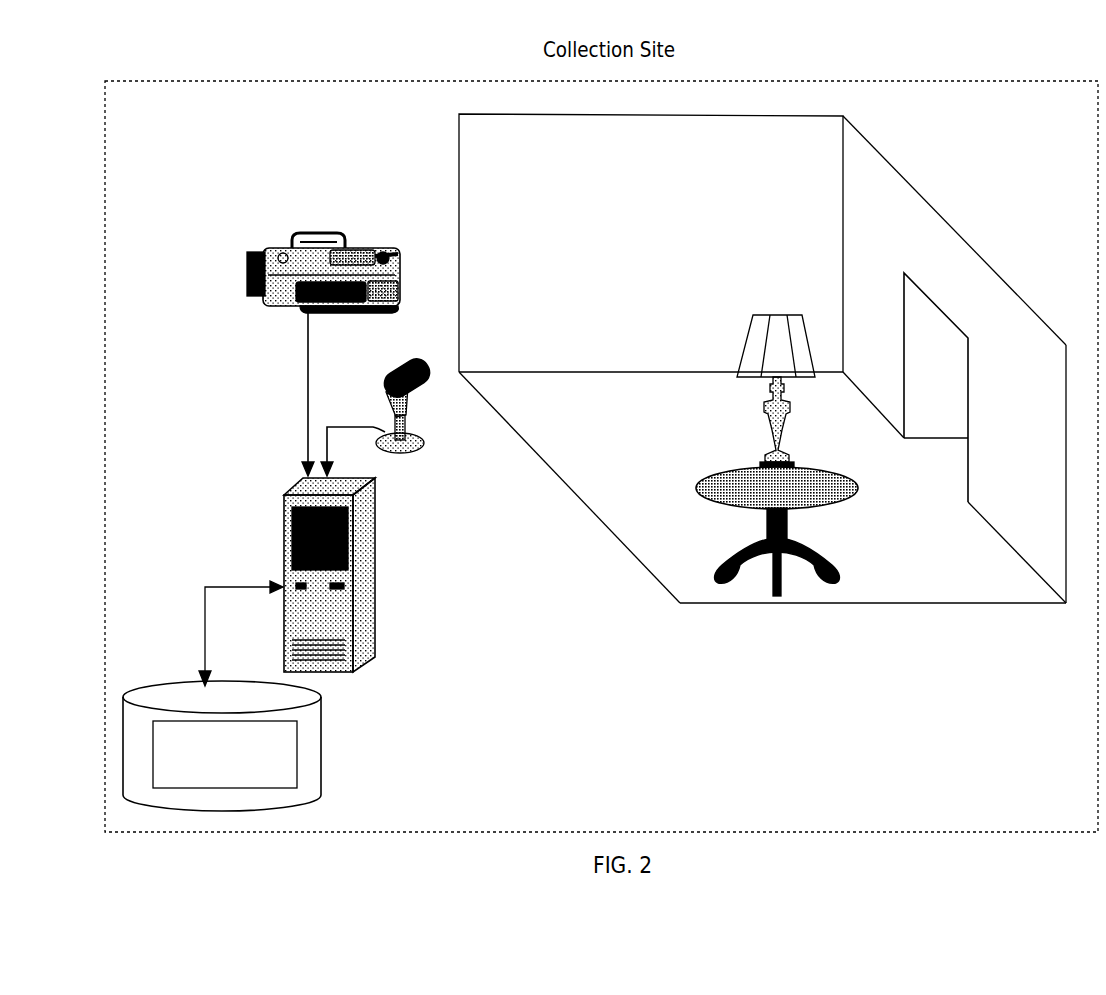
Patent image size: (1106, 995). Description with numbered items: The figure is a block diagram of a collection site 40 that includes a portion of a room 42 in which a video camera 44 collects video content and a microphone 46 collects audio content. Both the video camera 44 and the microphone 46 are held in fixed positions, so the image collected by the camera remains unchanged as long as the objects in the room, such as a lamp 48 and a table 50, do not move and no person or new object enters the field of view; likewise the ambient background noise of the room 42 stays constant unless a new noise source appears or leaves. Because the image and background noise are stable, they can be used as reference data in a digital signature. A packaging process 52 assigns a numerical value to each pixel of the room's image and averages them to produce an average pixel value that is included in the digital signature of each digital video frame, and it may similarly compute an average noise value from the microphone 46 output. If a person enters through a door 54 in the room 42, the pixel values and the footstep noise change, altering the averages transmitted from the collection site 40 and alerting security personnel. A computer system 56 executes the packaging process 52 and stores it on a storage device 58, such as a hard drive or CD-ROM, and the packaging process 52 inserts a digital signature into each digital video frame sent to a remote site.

The collection site 40 is at (190, 81).
The room 42 is at (915, 187).
The video camera 44 is at (388, 275).
The microphone 46 is at (413, 400).
The lamp 48 is at (752, 343).
The table 50 is at (728, 473).
The packaging process 52 is at (297, 762).
The door 54 is at (948, 315).
The computer system 56 is at (378, 568).
The storage device 58 is at (321, 737).